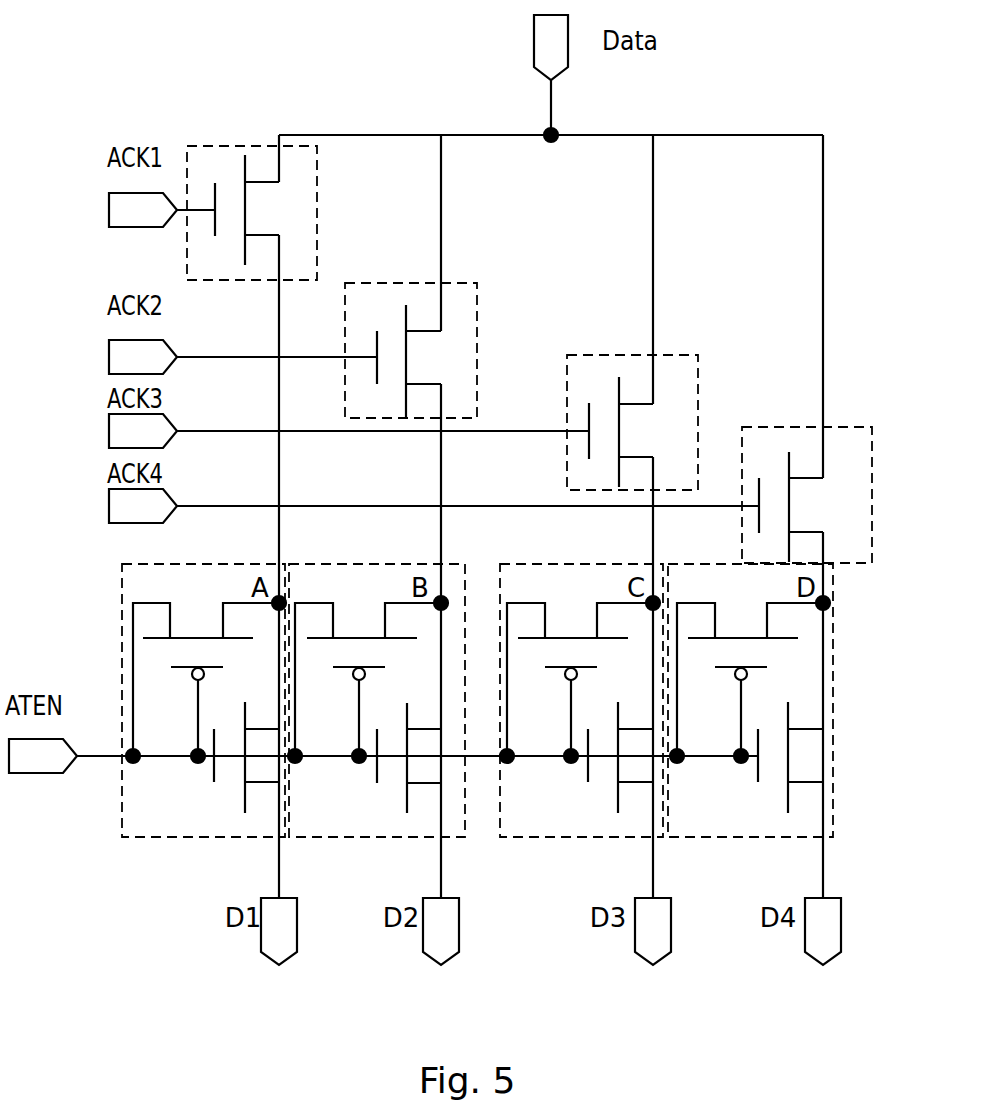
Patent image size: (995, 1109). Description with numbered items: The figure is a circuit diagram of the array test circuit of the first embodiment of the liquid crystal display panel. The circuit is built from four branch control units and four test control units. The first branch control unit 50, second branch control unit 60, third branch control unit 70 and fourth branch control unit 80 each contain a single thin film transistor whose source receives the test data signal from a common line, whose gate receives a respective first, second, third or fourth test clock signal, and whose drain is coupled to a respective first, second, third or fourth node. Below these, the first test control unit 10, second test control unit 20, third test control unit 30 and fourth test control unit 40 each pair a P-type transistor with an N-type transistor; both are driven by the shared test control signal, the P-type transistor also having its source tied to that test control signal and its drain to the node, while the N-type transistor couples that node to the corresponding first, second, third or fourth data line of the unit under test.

The first test control unit 10 is at (162, 838).
The second test control unit 20 is at (321, 838).
The third test control unit 30 is at (522, 838).
The fourth test control unit 40 is at (703, 838).
The first branch control unit 50 is at (208, 145).
The second branch control unit 60 is at (409, 283).
The third branch control unit 70 is at (590, 355).
The fourth branch control unit 80 is at (764, 427).